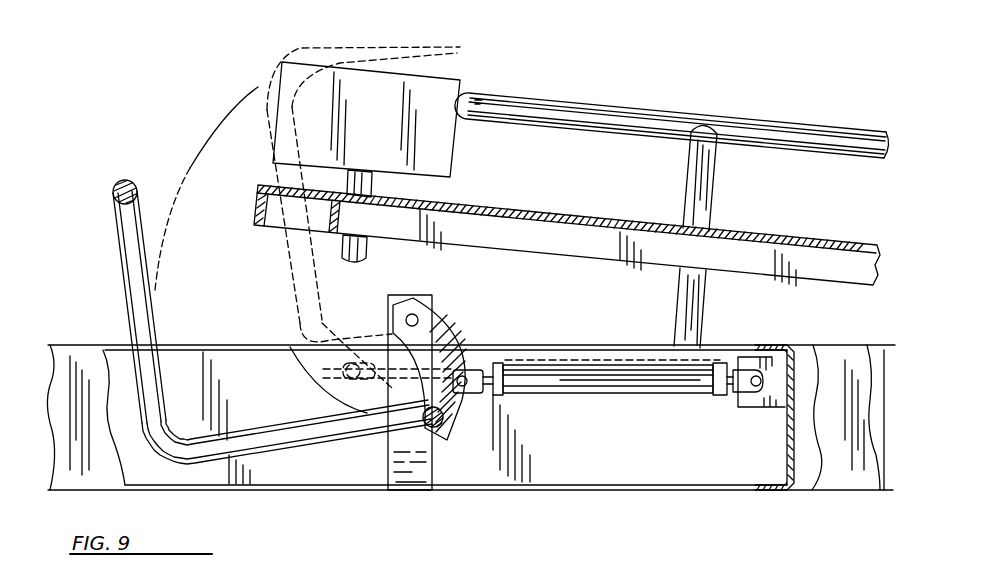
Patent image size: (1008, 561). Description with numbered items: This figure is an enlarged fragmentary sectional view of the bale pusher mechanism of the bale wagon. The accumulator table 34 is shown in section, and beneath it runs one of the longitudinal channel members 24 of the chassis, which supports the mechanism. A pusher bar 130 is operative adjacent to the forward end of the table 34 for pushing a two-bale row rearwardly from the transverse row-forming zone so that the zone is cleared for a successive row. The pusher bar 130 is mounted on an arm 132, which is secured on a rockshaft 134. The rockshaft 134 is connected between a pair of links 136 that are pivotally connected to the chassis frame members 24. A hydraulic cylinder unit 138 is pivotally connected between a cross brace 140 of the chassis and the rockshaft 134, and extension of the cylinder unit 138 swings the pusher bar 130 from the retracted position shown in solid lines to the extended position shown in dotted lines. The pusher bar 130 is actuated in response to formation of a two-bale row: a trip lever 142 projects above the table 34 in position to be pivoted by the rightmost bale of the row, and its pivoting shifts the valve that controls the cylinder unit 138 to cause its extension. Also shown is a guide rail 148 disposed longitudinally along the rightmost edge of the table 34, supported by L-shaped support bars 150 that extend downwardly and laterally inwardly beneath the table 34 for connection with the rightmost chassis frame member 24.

The longitudinal channel member 24 is at (613, 492).
The accumulator table 34 is at (558, 212).
The pusher bar 130 is at (113, 186).
The arm 132 is at (190, 405).
The rockshaft 134 is at (448, 432).
The link 136 is at (447, 331).
The hydraulic cylinder unit 138 is at (625, 378).
The cross brace 140 is at (786, 422).
The trip lever 142 is at (455, 140).
The guide rail 148 is at (750, 132).
The L-shaped support bar 150 is at (743, 168).